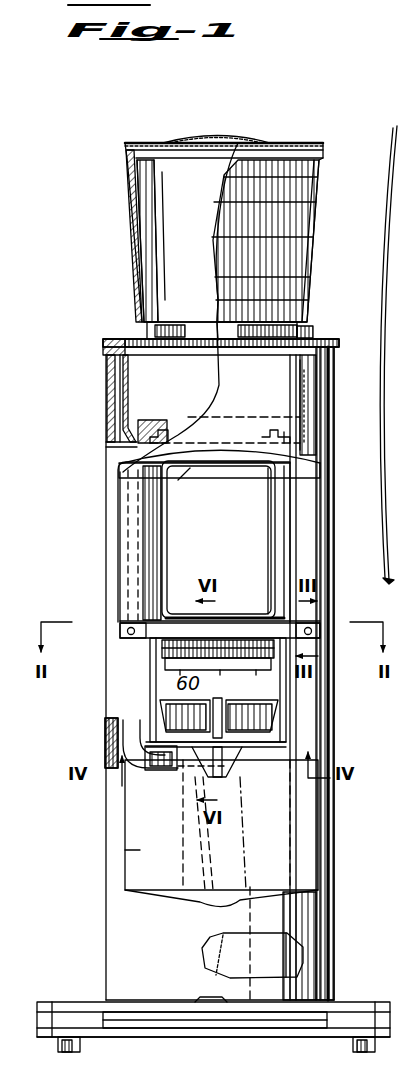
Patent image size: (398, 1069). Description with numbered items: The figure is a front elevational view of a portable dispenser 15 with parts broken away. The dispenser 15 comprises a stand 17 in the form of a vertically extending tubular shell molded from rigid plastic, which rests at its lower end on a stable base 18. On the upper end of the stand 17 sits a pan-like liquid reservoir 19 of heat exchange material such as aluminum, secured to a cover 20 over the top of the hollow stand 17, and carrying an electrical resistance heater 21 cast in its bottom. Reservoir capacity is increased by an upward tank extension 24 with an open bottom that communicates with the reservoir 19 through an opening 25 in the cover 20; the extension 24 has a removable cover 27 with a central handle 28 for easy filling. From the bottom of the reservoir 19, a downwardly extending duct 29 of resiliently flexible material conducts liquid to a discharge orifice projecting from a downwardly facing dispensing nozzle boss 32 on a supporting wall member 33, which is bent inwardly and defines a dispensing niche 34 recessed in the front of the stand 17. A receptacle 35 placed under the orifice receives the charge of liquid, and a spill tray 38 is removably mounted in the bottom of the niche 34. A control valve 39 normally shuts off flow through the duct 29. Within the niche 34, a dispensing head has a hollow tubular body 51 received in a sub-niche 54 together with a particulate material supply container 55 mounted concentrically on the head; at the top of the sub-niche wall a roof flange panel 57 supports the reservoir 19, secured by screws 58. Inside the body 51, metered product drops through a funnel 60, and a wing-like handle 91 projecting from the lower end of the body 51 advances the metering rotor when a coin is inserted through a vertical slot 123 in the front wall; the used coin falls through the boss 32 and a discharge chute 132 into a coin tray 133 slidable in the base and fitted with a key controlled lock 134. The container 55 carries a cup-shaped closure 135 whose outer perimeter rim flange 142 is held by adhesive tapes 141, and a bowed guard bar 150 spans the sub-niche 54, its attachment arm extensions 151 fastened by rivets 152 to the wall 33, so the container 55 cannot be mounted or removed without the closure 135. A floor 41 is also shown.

The dispenser 15 is at (100, 569).
The stand 17 is at (107, 539).
The base 18 is at (71, 998).
The liquid reservoir 19 is at (110, 393).
The cover 20 is at (140, 340).
The electrical resistance heater 21 is at (165, 437).
The tank extension 24 is at (126, 227).
The opening 25 is at (181, 338).
The removable cover 27 is at (152, 142).
The central handle 28 is at (230, 138).
The duct 29 is at (106, 442).
The dispensing nozzle boss 32 is at (242, 759).
The supporting wall member 33 is at (300, 727).
The dispensing niche 34 is at (138, 840).
The receptacle 35 is at (278, 848).
The spill tray 38 is at (234, 902).
The control valve 39 is at (155, 770).
The floor 41 is at (213, 1053).
The body 51 is at (292, 697).
The sub-niche 54 is at (286, 519).
The particulate material supply container 55 is at (244, 567).
The roof flange panel 57 is at (140, 460).
The screws 58 is at (321, 442).
The chute or funnel 60 is at (185, 716).
The handle 91 is at (236, 772).
The vertical slot 123 is at (228, 720).
The discharge chute 132 is at (225, 964).
The coin tray 133 is at (293, 1034).
The key controlled lock 134 is at (210, 1000).
The closure 135 is at (157, 664).
The adhesive tapes 141 is at (165, 612).
The outer perimeter rim flange 142 is at (233, 640).
The guard bar 150 is at (178, 614).
The attachment arm extensions 151 is at (140, 642).
The rivets 152 is at (120, 631).